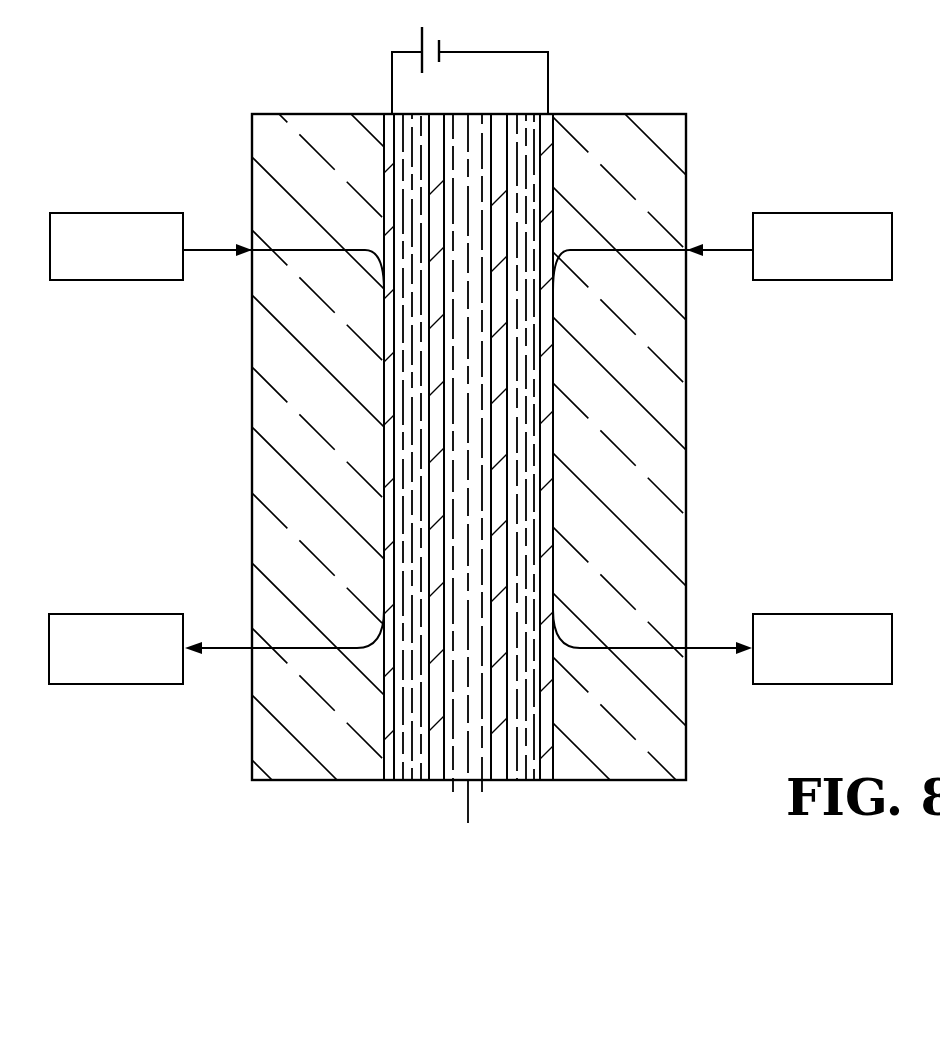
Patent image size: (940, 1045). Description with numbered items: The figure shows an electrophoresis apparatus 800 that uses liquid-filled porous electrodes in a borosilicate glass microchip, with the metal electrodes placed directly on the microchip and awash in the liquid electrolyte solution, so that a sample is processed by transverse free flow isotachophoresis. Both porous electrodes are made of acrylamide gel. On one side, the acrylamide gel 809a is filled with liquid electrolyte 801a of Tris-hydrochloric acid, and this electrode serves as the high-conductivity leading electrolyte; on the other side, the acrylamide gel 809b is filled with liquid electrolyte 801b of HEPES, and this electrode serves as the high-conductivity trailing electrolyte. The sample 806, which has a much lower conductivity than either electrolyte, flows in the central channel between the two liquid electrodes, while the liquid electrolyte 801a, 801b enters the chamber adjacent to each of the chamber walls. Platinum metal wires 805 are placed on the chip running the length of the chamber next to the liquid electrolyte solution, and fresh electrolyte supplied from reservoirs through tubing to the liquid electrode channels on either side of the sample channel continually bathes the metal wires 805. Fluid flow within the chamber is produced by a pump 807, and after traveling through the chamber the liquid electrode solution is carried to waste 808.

The electrophoresis apparatus 800 is at (762, 149).
The platinum metal wires 805 is at (387, 176).
The liquid electrolyte 801a is at (408, 455).
The liquid electrolyte 801b is at (527, 423).
The acrylamide gel 809a is at (437, 755).
The acrylamide gel 809b is at (498, 755).
The sample 806 is at (464, 808).
The pump 807 is at (150, 266).
The waste 808 is at (142, 666).